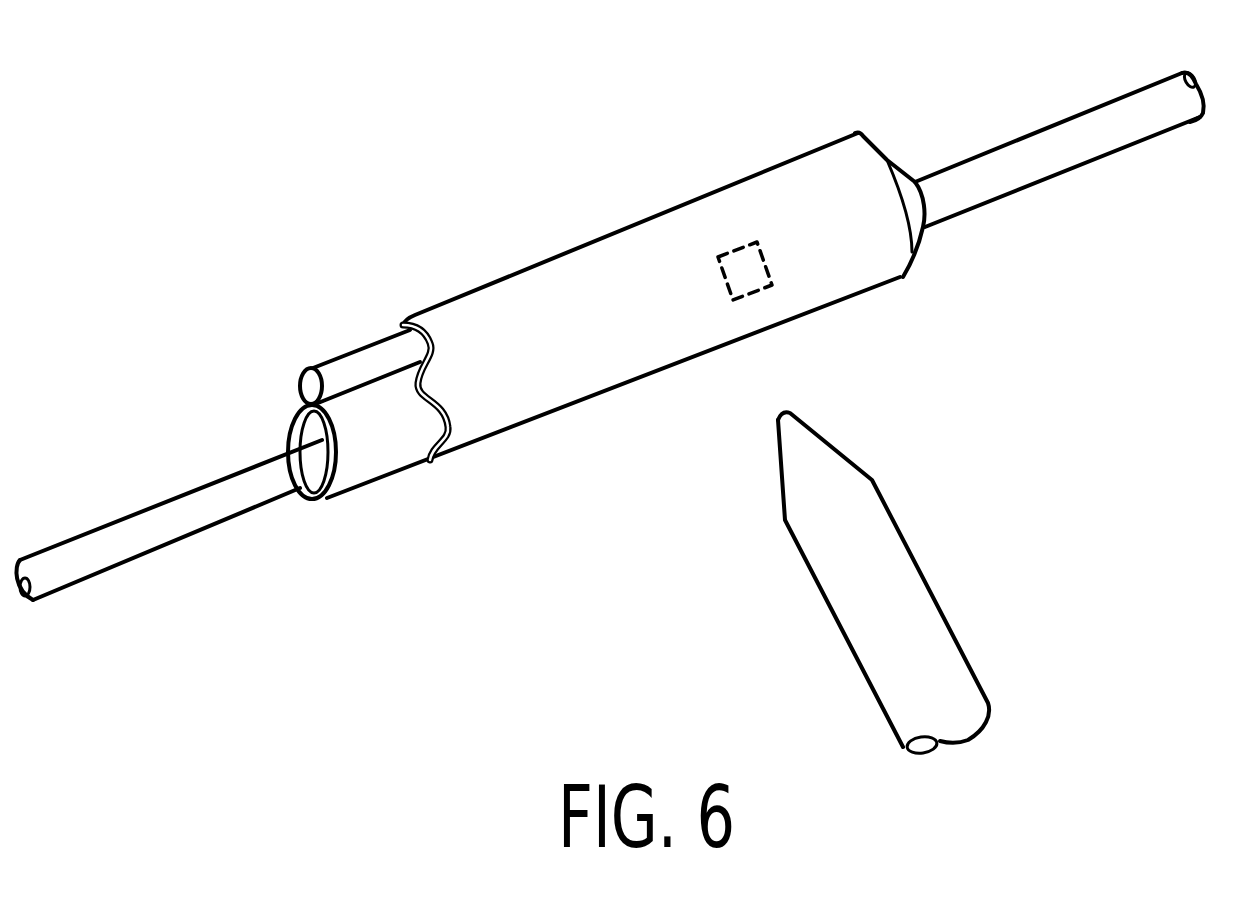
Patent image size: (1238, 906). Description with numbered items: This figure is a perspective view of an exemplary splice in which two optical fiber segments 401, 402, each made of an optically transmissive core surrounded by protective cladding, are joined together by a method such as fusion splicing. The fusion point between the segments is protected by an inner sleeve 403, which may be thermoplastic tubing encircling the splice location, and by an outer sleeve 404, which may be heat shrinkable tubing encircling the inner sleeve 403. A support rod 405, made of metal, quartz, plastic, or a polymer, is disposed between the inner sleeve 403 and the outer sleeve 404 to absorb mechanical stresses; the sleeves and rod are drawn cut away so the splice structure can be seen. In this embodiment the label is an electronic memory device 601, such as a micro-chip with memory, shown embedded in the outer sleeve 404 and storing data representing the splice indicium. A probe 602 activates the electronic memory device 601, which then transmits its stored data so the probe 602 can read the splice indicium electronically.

The optical fiber segment 401 is at (100, 540).
The optical fiber segment 402 is at (1042, 147).
The inner sleeve 403 is at (373, 467).
The outer sleeve 404 is at (505, 292).
The support rod 405 is at (343, 370).
The electronic memory device 601 is at (735, 245).
The probe 602 is at (930, 618).